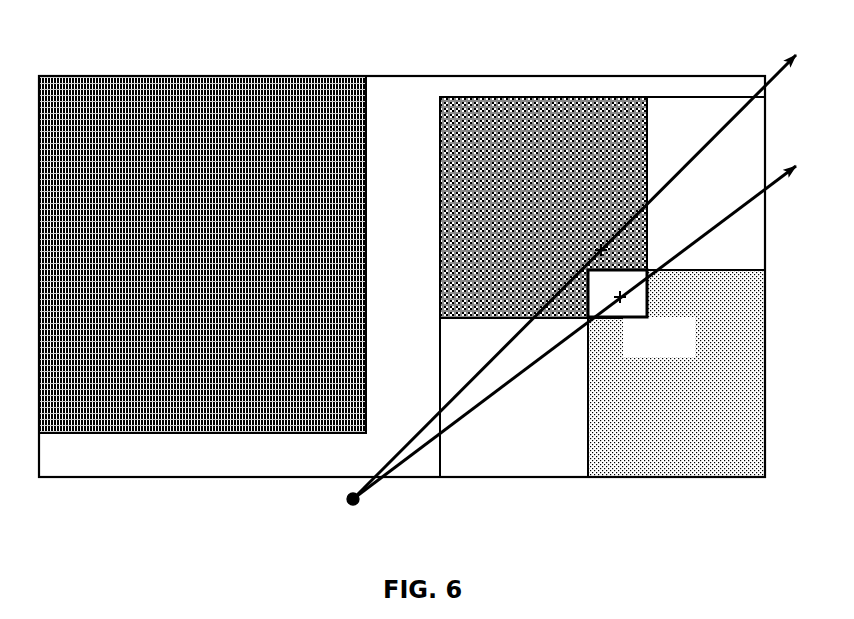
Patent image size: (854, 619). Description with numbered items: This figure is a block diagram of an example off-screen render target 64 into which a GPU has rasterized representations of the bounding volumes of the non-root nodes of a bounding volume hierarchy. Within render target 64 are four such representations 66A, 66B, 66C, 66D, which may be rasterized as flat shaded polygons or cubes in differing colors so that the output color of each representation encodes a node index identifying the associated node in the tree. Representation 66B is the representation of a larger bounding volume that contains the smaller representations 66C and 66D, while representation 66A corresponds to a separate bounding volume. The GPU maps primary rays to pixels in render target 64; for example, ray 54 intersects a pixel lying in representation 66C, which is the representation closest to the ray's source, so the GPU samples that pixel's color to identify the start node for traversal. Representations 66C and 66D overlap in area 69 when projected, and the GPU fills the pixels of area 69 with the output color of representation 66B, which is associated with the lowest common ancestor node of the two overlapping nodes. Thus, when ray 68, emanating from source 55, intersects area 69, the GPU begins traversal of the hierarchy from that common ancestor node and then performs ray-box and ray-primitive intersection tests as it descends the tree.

The render target 64 is at (567, 68).
The representation 66A is at (282, 77).
The representation 66B is at (765, 142).
The representation 66C is at (648, 142).
The representation 66D is at (680, 270).
The ray 54 is at (499, 352).
The ray 68 is at (485, 406).
The area 69 is at (618, 320).
The source 55 is at (359, 505).